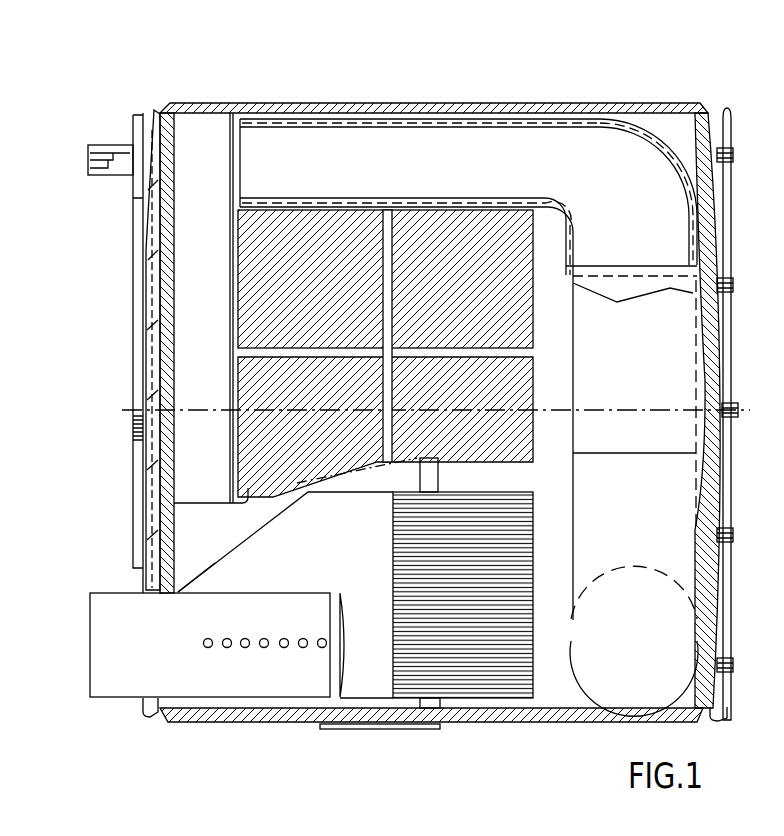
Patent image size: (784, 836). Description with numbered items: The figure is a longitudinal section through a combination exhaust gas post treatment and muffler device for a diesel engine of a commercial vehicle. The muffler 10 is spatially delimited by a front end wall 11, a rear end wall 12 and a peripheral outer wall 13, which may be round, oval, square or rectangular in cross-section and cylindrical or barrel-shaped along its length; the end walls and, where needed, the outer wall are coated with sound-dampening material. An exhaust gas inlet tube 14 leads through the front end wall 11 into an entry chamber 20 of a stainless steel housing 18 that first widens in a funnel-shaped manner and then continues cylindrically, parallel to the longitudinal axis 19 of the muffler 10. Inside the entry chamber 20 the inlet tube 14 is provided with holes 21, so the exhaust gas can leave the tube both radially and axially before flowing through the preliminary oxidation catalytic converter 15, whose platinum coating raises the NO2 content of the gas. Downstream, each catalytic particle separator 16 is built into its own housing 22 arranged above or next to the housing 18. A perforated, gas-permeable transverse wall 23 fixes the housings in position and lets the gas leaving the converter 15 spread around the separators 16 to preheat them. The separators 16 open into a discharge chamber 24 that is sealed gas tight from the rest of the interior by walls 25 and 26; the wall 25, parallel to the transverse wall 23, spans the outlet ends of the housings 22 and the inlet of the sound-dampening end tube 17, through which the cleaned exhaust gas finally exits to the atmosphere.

The muffler 10 is at (548, 100).
The front end wall 11 is at (133, 292).
The rear end wall 12 is at (727, 208).
The peripheral outer wall 13 is at (655, 116).
The exhaust gas inlet tube 14 is at (128, 675).
The preliminary oxidation catalytic converter 15 is at (487, 680).
The catalytic particle separator 16 is at (245, 245).
The sound-dampening end tube 17 is at (610, 540).
The housing 18 is at (215, 545).
The longitudinal axis 19 is at (555, 410).
The entry chamber 20 is at (338, 557).
The holes 21 is at (303, 650).
The housing 22 is at (290, 205).
The transverse wall 23 is at (440, 476).
The discharge chamber 24 is at (190, 135).
The wall 25 is at (230, 145).
The wall 26 is at (185, 470).